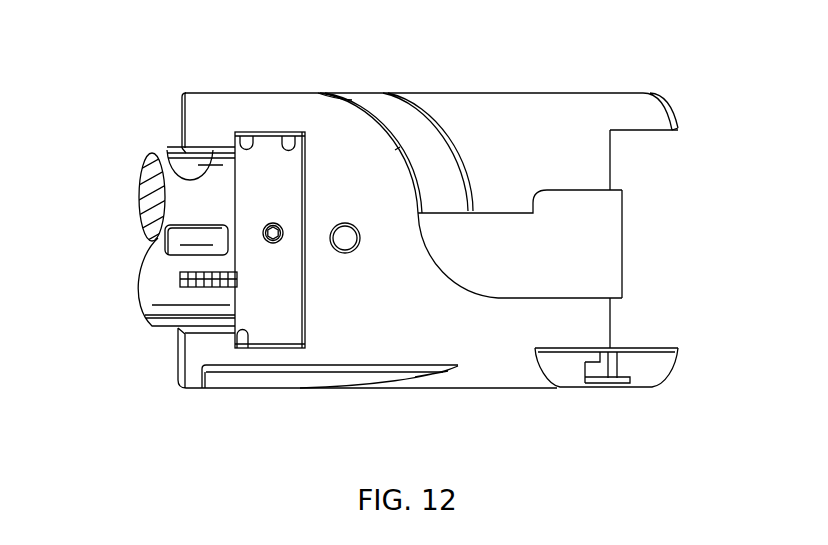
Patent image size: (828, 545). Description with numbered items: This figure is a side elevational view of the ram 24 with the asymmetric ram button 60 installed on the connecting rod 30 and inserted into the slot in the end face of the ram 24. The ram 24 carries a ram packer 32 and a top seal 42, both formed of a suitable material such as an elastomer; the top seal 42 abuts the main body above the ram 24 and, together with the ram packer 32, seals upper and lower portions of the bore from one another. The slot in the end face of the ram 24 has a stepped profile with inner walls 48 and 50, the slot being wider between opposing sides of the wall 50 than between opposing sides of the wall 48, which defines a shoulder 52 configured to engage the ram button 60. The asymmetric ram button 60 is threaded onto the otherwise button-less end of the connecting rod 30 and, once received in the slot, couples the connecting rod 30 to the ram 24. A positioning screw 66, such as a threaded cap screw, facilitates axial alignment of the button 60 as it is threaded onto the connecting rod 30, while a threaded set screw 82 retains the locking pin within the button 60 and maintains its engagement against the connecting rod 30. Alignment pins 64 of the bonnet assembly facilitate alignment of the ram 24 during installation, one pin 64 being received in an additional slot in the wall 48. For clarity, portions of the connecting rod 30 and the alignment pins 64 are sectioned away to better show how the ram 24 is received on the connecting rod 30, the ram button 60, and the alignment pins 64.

The ram 24 is at (512, 383).
The connecting rod 30 is at (181, 195).
The ram packer 32 is at (603, 253).
The top seal 42 is at (358, 93).
The inner wall 48 is at (181, 197).
The inner wall 50 is at (283, 135).
The shoulder 52 is at (252, 140).
The asymmetric ram button 60 is at (248, 333).
The alignment pin 64 is at (167, 247).
The positioning screw 66 is at (182, 279).
The threaded set screw 82 is at (272, 222).